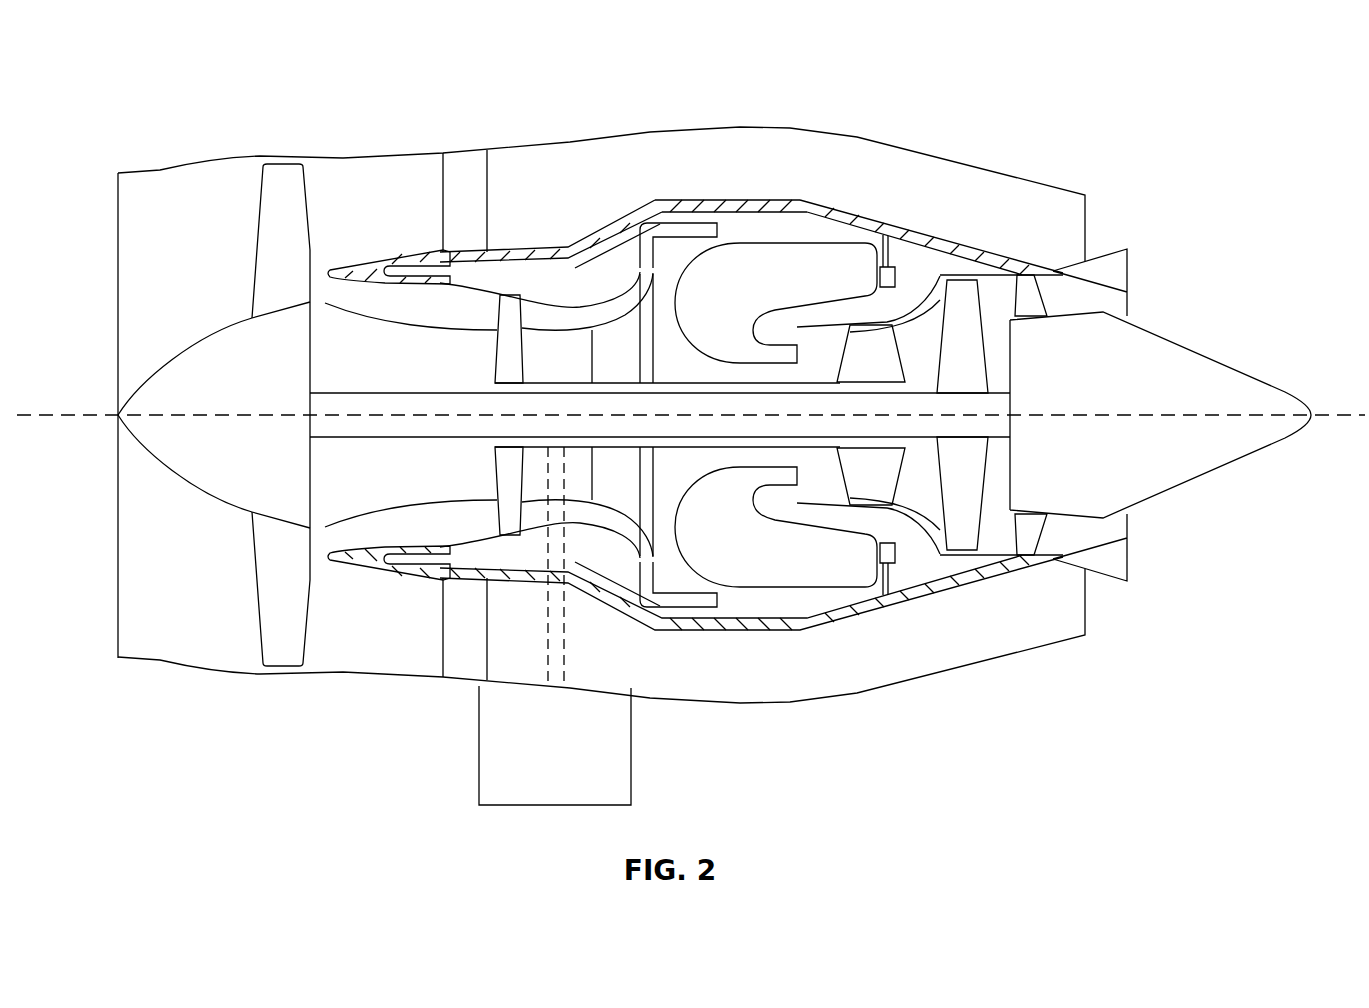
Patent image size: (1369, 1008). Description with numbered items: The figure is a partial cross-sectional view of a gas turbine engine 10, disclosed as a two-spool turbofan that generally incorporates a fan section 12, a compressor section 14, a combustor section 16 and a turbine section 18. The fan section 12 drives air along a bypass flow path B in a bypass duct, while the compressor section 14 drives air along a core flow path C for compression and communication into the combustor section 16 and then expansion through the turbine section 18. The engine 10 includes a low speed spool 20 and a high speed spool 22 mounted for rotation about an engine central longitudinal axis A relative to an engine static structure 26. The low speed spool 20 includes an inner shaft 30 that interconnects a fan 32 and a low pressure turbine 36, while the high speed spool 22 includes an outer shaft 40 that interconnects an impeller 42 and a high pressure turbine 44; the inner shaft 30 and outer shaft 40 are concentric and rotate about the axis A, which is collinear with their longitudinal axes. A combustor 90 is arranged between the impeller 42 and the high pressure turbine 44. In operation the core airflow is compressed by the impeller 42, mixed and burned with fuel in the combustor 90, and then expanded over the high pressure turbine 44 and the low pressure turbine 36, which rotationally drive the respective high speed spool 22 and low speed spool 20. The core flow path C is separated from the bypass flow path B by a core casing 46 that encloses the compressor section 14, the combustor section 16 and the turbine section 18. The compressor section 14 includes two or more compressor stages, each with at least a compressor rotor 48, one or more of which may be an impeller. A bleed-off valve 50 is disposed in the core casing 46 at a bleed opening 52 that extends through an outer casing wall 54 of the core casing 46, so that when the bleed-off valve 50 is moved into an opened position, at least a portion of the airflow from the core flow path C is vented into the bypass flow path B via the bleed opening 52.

The gas turbine engine 10 is at (227, 72).
The fan section 12 is at (262, 135).
The compressor section 14 is at (515, 130).
The combustor section 16 is at (825, 122).
The turbine section 18 is at (1053, 175).
The low speed spool 20 is at (368, 448).
The high speed spool 22 is at (685, 452).
The engine static structure 26 is at (479, 758).
The inner shaft 30 is at (437, 450).
The fan 32 is at (252, 235).
The low pressure turbine 36 is at (963, 520).
The outer shaft 40 is at (743, 443).
The impeller 42 is at (630, 502).
The high pressure turbine 44 is at (873, 487).
The core casing 46 is at (622, 222).
The compressor rotor 48 is at (505, 375).
The bleed-off valve 50 is at (550, 247).
The bleed opening 52 is at (510, 247).
The outer casing wall 54 is at (585, 240).
The combustor 90 is at (803, 273).
The engine central longitudinal axis A is at (52, 417).
The bypass flow path B is at (684, 183).
The core flow path C is at (410, 313).